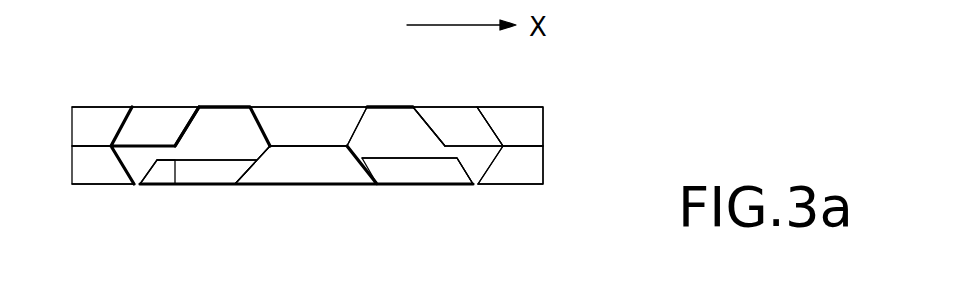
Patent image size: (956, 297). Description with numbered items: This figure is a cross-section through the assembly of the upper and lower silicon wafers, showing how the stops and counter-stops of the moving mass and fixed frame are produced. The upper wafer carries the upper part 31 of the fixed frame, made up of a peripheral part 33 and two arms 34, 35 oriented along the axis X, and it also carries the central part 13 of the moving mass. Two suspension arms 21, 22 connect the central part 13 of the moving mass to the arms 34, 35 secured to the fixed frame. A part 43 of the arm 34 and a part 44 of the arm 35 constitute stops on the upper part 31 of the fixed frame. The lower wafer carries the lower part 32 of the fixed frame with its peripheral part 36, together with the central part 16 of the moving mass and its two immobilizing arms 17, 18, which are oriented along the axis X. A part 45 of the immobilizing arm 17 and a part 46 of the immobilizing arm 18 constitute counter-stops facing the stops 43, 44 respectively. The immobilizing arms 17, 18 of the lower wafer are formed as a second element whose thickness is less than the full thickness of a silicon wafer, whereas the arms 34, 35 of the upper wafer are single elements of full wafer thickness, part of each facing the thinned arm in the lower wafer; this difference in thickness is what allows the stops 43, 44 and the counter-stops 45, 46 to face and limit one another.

The central part 13 is at (320, 120).
The central part 16 is at (317, 170).
The immobilizing arm 17 is at (225, 162).
The immobilizing arm 18 is at (395, 167).
The suspension arm 21 is at (230, 107).
The suspension arm 22 is at (395, 107).
The upper part of the fixed frame 31 is at (523, 123).
The lower part of the fixed frame 32 is at (523, 172).
The peripheral part 33 is at (92, 120).
The arm 34 is at (154, 120).
The arm 35 is at (472, 120).
The peripheral part 36 is at (92, 170).
The stop 43 is at (178, 128).
The stop 44 is at (447, 128).
The counter-stop 45 is at (170, 170).
The counter-stop 46 is at (452, 172).